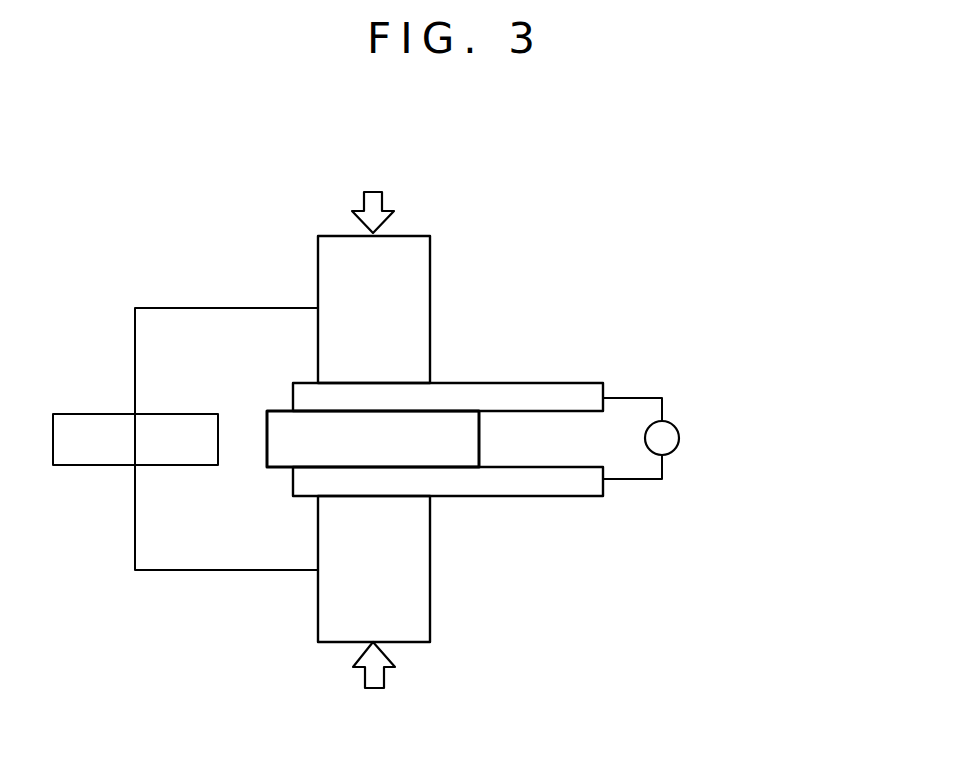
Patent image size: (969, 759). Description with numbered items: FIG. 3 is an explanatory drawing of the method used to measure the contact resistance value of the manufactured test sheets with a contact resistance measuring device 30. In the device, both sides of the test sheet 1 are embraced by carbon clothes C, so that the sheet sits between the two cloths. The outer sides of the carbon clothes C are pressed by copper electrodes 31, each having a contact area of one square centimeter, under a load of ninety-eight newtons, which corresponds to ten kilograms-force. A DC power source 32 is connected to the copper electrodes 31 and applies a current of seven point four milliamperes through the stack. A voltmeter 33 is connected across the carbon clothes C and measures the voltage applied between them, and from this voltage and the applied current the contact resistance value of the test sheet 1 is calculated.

The contact resistance measuring device 30 is at (504, 223).
The copper electrode 31 is at (413, 538).
The carbon cloth C is at (514, 398).
The test sheet 1 is at (267, 427).
The DC power source 32 is at (83, 413).
The voltmeter 33 is at (678, 450).